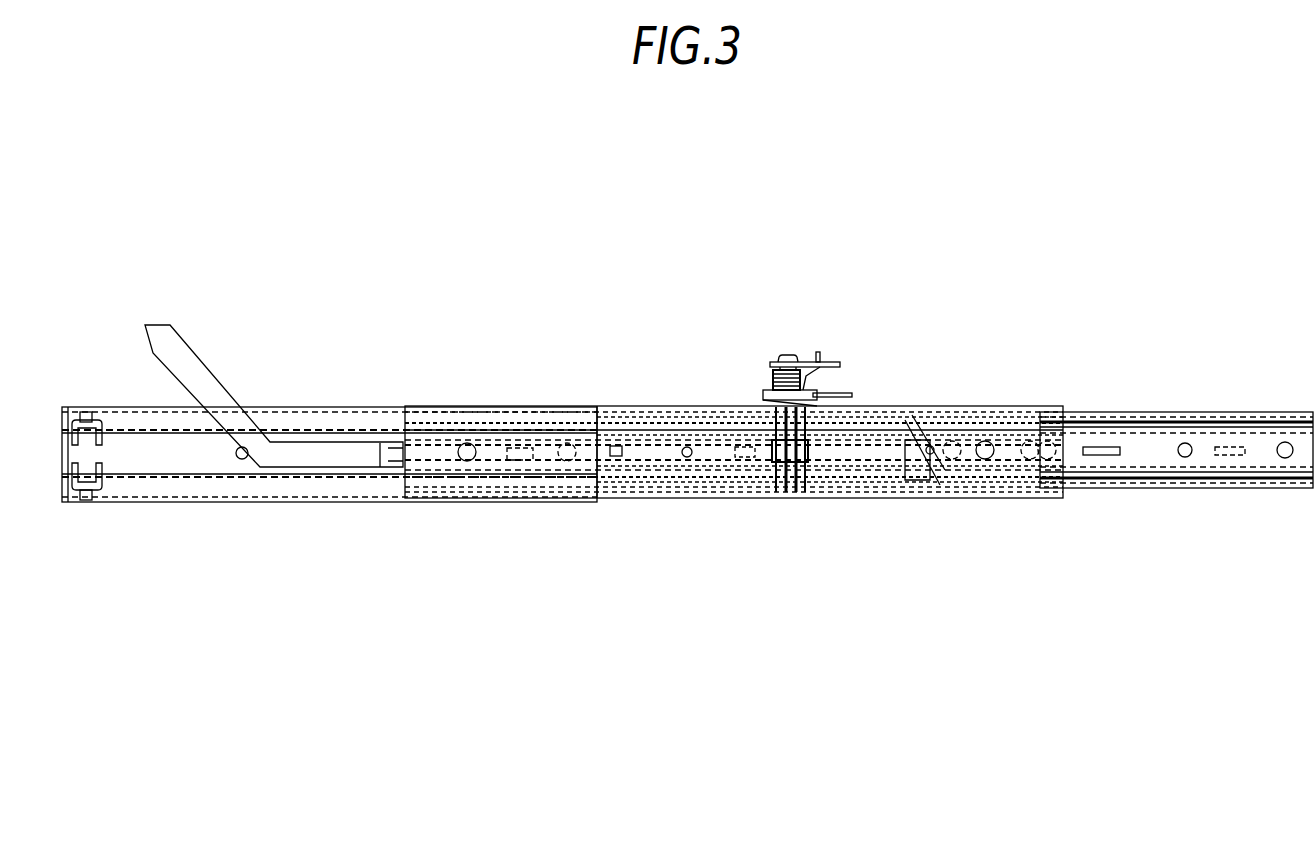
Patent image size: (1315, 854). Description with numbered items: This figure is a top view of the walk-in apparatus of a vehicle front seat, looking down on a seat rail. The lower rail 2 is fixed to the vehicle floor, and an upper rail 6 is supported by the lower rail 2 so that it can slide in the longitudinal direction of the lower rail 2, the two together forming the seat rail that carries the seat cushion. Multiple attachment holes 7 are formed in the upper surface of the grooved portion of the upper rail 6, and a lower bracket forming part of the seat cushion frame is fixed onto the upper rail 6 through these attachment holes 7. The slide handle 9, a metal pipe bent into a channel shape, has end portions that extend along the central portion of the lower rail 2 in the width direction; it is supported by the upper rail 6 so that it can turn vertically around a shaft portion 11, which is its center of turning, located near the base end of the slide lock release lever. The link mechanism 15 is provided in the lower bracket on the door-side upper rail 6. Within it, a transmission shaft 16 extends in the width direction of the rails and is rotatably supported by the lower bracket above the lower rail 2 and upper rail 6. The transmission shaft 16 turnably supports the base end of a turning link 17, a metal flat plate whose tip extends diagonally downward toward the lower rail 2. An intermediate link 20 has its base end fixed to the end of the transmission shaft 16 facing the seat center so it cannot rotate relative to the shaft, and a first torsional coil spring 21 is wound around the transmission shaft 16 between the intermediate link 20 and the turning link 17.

The lower rail 2 is at (139, 504).
The upper rail 6 is at (1250, 412).
The attachment holes 7 is at (467, 444).
The slide handle 9 is at (172, 330).
The shaft portion 11 is at (583, 500).
The link mechanism 15 is at (814, 344).
The transmission shaft 16 is at (786, 354).
The turning link 17 is at (835, 392).
The intermediate link 20 is at (838, 352).
The first torsional coil spring 21 is at (773, 376).